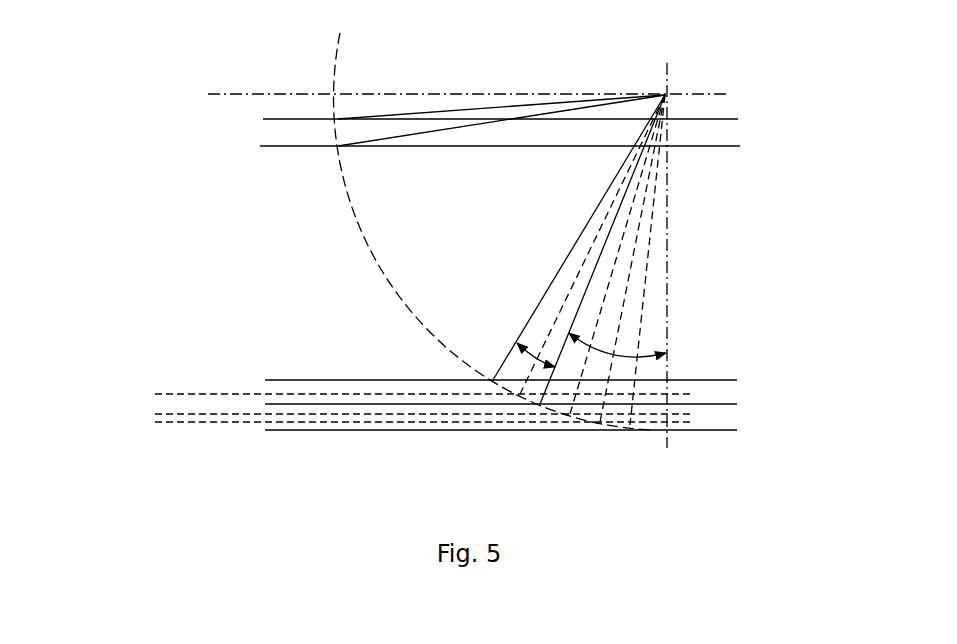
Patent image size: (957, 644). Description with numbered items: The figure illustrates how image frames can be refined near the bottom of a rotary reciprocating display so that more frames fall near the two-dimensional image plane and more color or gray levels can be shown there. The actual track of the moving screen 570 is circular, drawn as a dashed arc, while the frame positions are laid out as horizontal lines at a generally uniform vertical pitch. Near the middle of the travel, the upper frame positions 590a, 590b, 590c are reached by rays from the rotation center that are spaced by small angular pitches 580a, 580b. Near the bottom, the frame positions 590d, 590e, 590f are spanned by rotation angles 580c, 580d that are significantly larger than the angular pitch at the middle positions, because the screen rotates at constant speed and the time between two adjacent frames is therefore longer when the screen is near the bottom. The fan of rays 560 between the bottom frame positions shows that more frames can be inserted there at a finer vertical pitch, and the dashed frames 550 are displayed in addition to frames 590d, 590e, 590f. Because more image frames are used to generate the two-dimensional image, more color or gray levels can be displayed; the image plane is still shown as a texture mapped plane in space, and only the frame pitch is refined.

The frames 550 is at (150, 383).
The diffracted light beams 560 is at (572, 264).
The moving screen 570 is at (368, 262).
The angular pitch 580a is at (448, 157).
The angular pitch 580b is at (490, 168).
The rotation angle between two adjacent frames 580c is at (538, 333).
The rotation angle between two adjacent frames 580d is at (627, 335).
The optical axis reference line 590a is at (745, 97).
The reference line 590b is at (748, 122).
The reference line 590c is at (757, 146).
The frame 590d is at (750, 377).
The frame 590e is at (750, 405).
The frame 590f is at (750, 428).